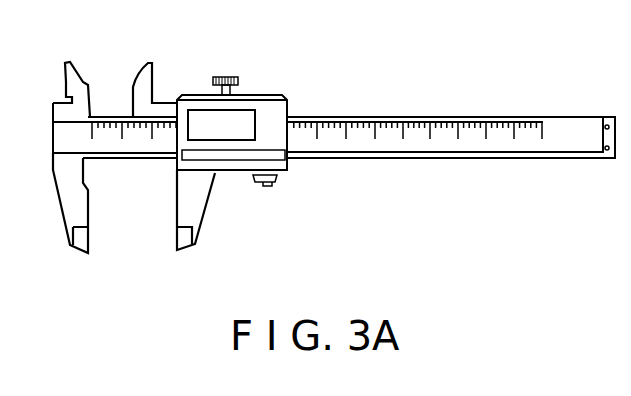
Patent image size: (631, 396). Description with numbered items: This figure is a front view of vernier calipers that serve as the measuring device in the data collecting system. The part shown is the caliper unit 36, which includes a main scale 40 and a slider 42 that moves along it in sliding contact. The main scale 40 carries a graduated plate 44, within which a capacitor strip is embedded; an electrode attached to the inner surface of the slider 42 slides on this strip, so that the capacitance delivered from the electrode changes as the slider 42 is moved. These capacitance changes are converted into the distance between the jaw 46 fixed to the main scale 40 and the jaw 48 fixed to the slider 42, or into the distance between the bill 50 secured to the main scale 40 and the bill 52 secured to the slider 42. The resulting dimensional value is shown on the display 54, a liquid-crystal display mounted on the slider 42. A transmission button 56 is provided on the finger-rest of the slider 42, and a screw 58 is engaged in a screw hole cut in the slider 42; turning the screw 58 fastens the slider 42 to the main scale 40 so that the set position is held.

The caliper unit 36 is at (175, 63).
The main scale 40 is at (45, 148).
The slider 42 is at (278, 96).
The graduated plate 44 is at (448, 143).
The jaw 46 is at (75, 252).
The jaw 48 is at (193, 246).
The bill 50 is at (80, 66).
The bill 52 is at (138, 66).
The display 54 is at (240, 140).
The transmission button 56 is at (267, 186).
The screw 58 is at (232, 75).